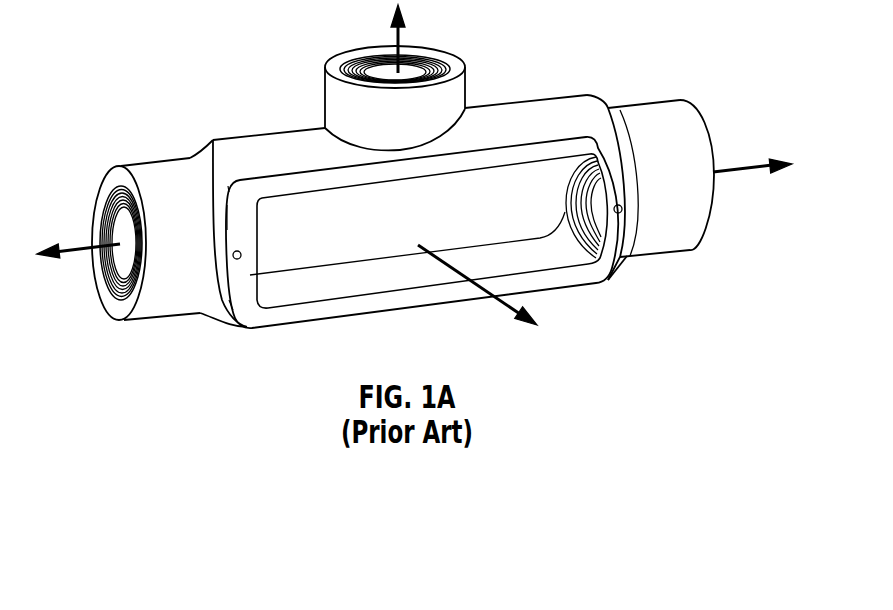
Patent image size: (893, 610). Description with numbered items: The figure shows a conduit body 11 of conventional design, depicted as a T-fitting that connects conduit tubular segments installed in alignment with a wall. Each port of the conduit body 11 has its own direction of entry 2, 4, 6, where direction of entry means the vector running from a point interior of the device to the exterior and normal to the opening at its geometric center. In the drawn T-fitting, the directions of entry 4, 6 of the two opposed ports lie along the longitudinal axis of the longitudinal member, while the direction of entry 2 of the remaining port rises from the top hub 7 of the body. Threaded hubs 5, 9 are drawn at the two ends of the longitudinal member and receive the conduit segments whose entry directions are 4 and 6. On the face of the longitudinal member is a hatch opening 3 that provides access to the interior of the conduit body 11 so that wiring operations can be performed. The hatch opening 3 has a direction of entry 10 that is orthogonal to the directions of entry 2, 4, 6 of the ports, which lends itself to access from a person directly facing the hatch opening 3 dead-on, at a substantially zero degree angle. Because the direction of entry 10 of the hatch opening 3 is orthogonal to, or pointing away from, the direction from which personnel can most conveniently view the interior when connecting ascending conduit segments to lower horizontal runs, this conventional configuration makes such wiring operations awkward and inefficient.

The direction of entry 2 is at (395, 35).
The hatch opening 3 is at (336, 287).
The direction of entry 4 is at (72, 245).
The first conduit hub 5 is at (92, 272).
The direction of entry 6 is at (758, 162).
The top hub 7 is at (412, 41).
The second conduit hub 9 is at (727, 194).
The direction of entry 10 is at (516, 323).
The conduit body 11 is at (637, 54).